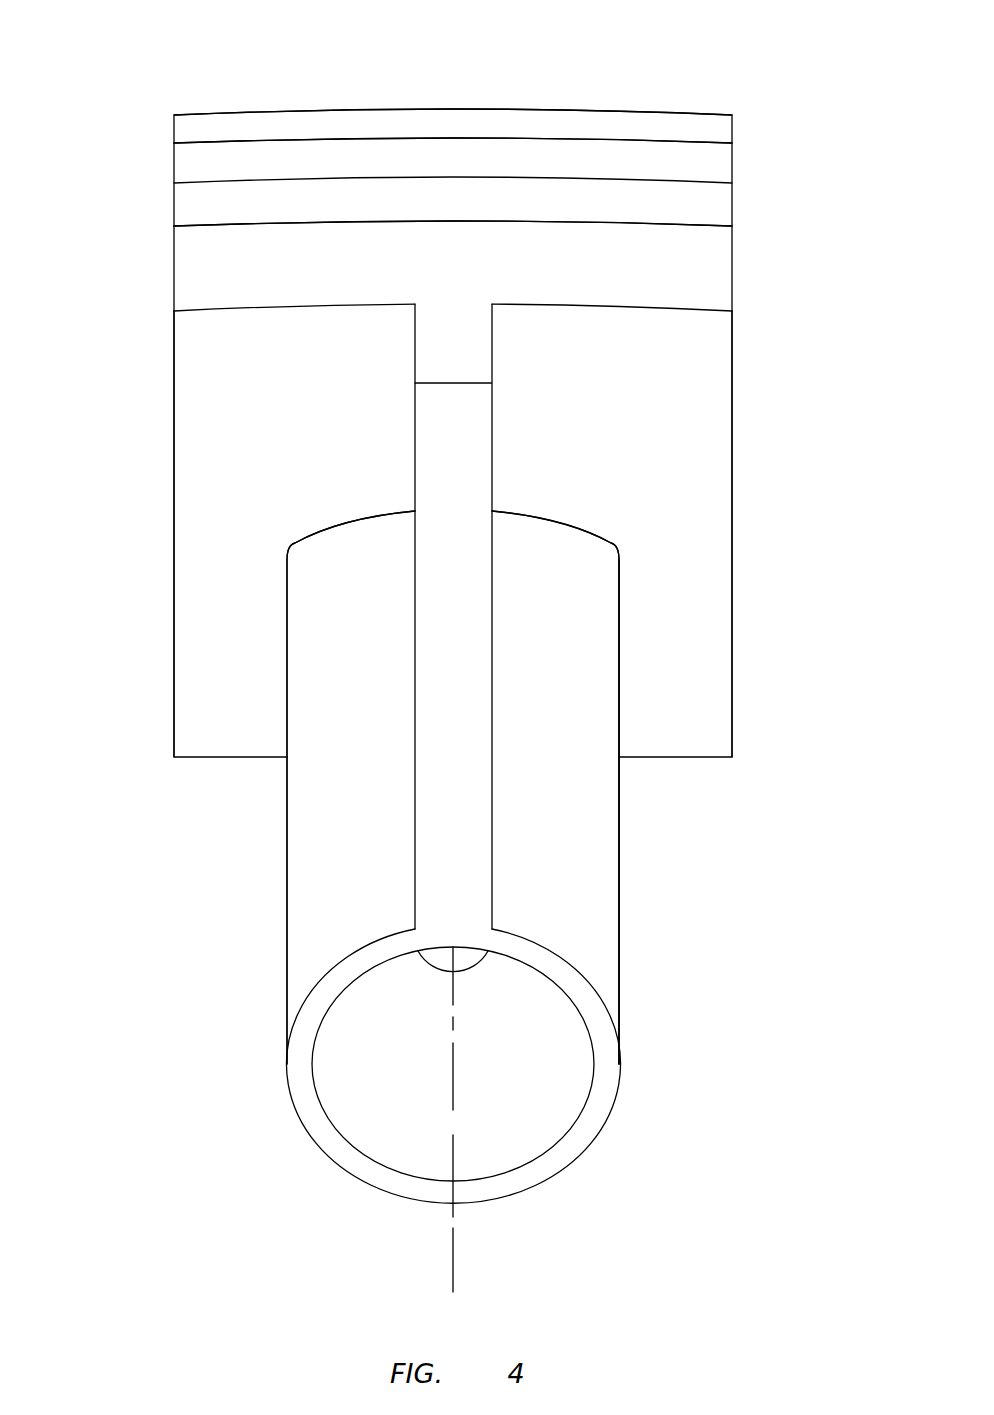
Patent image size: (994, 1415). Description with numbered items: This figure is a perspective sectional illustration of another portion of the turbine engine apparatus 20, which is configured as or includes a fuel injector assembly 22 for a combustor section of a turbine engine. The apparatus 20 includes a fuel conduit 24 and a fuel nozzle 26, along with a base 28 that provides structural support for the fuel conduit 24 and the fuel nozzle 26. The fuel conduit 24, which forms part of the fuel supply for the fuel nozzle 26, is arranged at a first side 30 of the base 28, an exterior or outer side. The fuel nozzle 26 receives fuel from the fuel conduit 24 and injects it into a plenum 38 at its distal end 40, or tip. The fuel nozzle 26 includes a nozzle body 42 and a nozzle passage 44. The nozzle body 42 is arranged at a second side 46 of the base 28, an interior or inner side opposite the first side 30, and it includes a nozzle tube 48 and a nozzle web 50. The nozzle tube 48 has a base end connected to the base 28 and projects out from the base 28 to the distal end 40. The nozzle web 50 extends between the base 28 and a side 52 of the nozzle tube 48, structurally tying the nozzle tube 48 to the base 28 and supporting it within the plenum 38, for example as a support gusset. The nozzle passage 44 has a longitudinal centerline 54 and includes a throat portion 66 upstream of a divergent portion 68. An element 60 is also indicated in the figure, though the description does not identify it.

The apparatus 20 is at (775, 84).
The fuel injector assembly 22 is at (194, 1148).
The fuel conduit 24 is at (152, 157).
The fuel nozzle 26 is at (640, 922).
The base 28 is at (152, 285).
The first side 30 is at (690, 224).
The plenum 38 is at (215, 1297).
The distal end 40 is at (605, 1082).
The nozzle body 42 is at (453, 787).
The nozzle passage 44 is at (528, 1125).
The second side 46 is at (675, 320).
The nozzle tube 48 is at (619, 832).
The nozzle web 50 is at (492, 629).
The side 52 is at (415, 831).
The longitudinal centerline 54 is at (453, 1278).
The pin bore 60 is at (338, 1095).
The throat portion 66 is at (437, 965).
The divergent portion 68 is at (380, 1108).